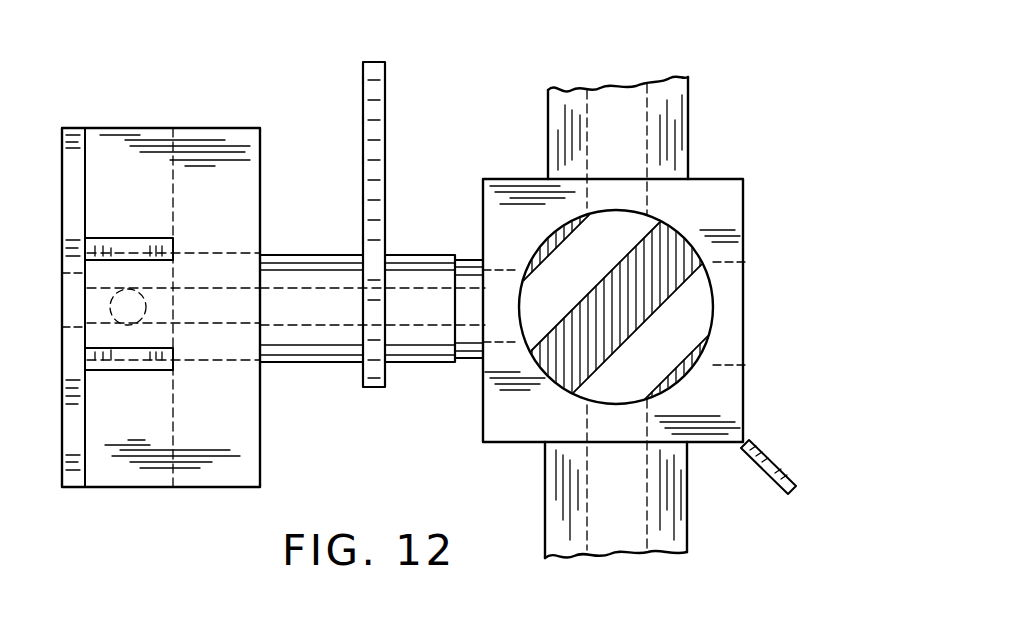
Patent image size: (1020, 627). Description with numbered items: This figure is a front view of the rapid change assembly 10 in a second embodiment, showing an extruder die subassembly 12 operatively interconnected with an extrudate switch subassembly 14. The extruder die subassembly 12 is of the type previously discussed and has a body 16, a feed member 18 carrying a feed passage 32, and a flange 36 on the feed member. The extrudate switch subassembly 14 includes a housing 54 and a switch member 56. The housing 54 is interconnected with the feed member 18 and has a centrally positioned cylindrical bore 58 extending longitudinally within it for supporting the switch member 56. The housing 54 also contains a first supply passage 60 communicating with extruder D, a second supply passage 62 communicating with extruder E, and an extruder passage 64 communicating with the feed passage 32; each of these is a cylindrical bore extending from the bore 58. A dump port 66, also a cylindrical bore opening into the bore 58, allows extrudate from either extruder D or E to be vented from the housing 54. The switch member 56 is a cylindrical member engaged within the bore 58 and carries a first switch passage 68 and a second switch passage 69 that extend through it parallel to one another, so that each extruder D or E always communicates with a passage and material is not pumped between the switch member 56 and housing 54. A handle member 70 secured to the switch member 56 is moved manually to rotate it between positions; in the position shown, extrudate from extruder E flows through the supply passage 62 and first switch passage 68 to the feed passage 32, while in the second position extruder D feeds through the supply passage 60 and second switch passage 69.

The valve assembly 10 is at (131, 94).
The extruder die subassembly 12 is at (207, 62).
The extrudate switch subassembly 14 is at (750, 113).
The actuator housing 16 is at (207, 470).
The feed member 18 is at (413, 364).
The feed passage 32 is at (328, 316).
The disc 36 is at (386, 90).
The housing 54 is at (714, 382).
The switch member 56 is at (693, 222).
The cylindrical bore 58 is at (596, 394).
The first supply passage 60 is at (612, 472).
The second supply passage 62 is at (651, 190).
The extruder passage 64 is at (496, 278).
The dump port 66 is at (757, 272).
The first switch passage 68 is at (592, 248).
The second switch passage 69 is at (677, 318).
The handle member 70 is at (770, 458).
The extruder E is at (548, 122).
The extruder D is at (688, 535).